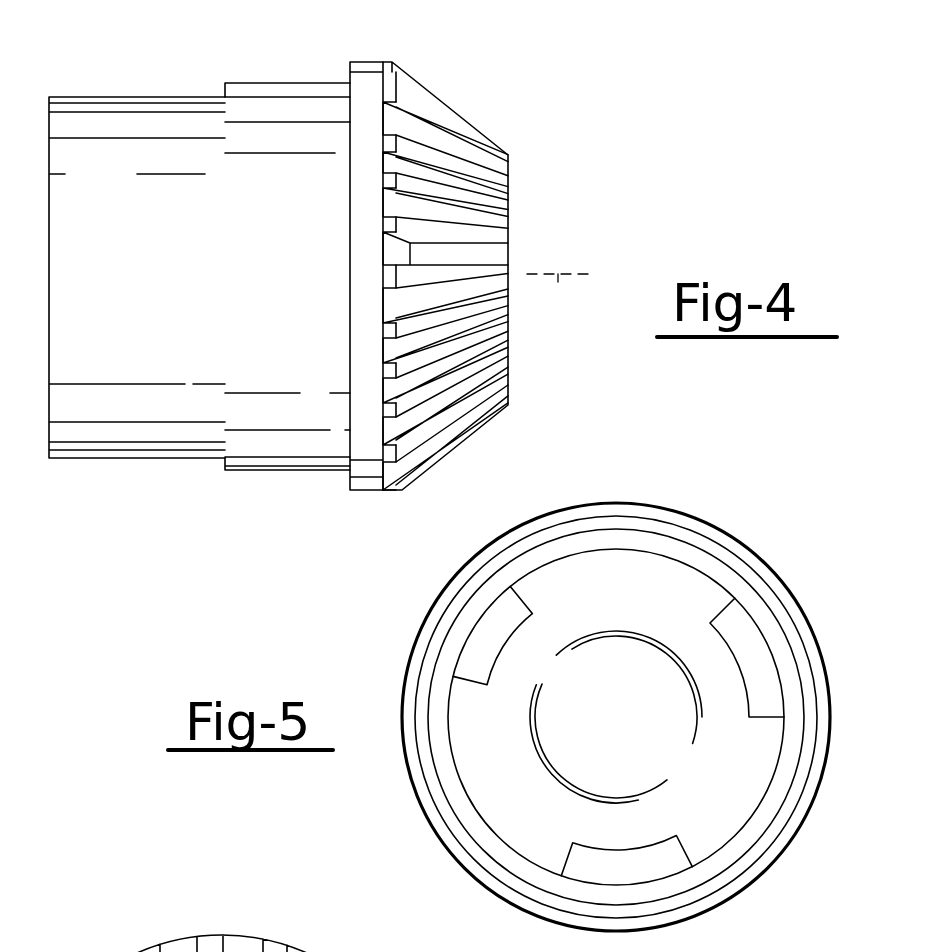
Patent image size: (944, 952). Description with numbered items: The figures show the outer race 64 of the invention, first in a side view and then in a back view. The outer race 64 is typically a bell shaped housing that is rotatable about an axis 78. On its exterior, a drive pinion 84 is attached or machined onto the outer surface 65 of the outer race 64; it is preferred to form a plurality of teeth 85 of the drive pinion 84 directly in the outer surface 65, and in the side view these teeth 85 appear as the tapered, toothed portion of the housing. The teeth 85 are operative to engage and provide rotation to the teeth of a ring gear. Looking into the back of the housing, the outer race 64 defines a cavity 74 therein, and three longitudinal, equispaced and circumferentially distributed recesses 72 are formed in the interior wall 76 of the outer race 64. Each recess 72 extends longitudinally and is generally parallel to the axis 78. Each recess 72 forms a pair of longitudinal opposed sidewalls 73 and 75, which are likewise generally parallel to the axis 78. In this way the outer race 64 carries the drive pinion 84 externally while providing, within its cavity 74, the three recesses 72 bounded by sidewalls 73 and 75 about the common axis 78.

In FIG. 4, the outer race 64 is at (273, 460).
In FIG. 4, the outer surface 65 is at (365, 72).
In FIG. 4, the drive pinion 84 is at (510, 268).
In FIG. 4, the teeth 85 is at (437, 92).
In FIG. 4, the axis 78 is at (563, 290).
In FIG. 5, the axis 78 is at (613, 712).
In FIG. 5, the recesses 72 is at (727, 792).
In FIG. 5, the sidewall 73 is at (517, 602).
In FIG. 5, the cavity 74 is at (738, 763).
In FIG. 5, the sidewall 75 is at (733, 600).
In FIG. 5, the interior wall 76 is at (633, 567).